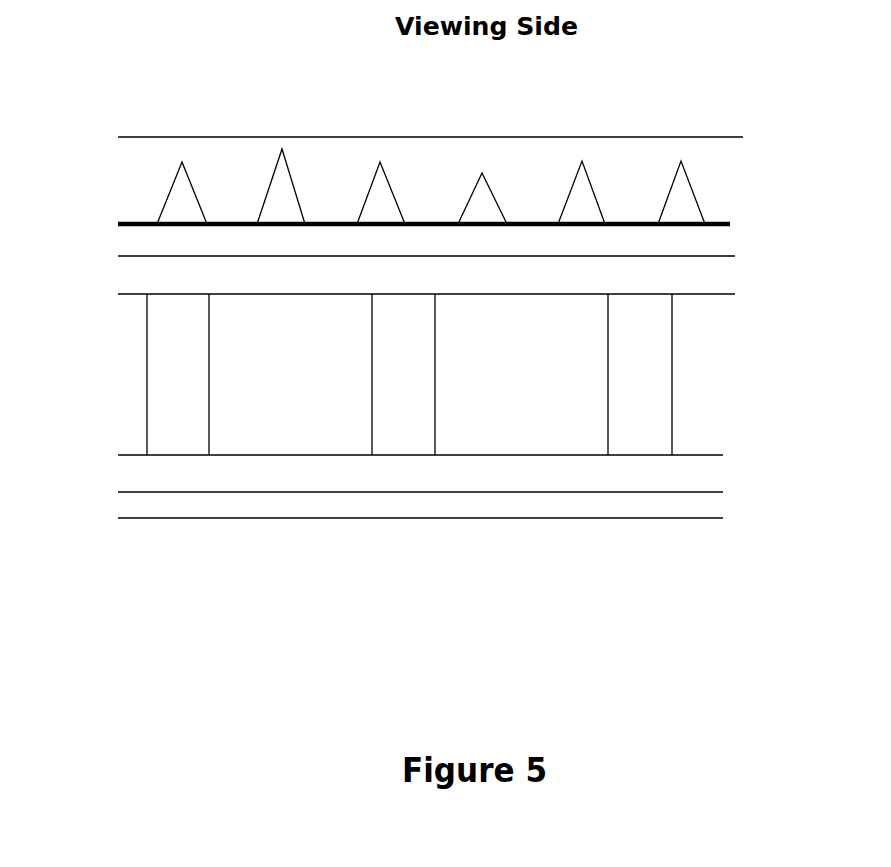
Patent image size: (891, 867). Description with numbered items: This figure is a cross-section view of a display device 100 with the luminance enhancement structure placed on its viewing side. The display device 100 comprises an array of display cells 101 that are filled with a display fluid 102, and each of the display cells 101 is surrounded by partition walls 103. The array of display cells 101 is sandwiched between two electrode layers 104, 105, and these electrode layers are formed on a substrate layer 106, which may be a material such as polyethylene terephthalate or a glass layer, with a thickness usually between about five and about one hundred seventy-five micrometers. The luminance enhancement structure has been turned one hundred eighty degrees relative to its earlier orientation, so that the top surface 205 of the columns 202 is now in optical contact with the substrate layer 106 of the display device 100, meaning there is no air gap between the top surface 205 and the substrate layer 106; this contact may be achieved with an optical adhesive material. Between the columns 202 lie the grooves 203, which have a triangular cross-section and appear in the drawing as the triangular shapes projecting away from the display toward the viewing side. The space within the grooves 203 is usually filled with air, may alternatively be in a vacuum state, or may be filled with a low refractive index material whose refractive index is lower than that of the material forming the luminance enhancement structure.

The display device 100 is at (723, 382).
The display cells 101 is at (248, 369).
The display fluid 102 is at (260, 407).
The partition walls 103 is at (411, 407).
The electrode layer 104 is at (718, 274).
The electrode layer 105 is at (535, 468).
The substrate layer 106 is at (132, 237).
The columns 202 is at (331, 197).
The grooves 203 is at (183, 198).
The top surface 205 is at (231, 222).